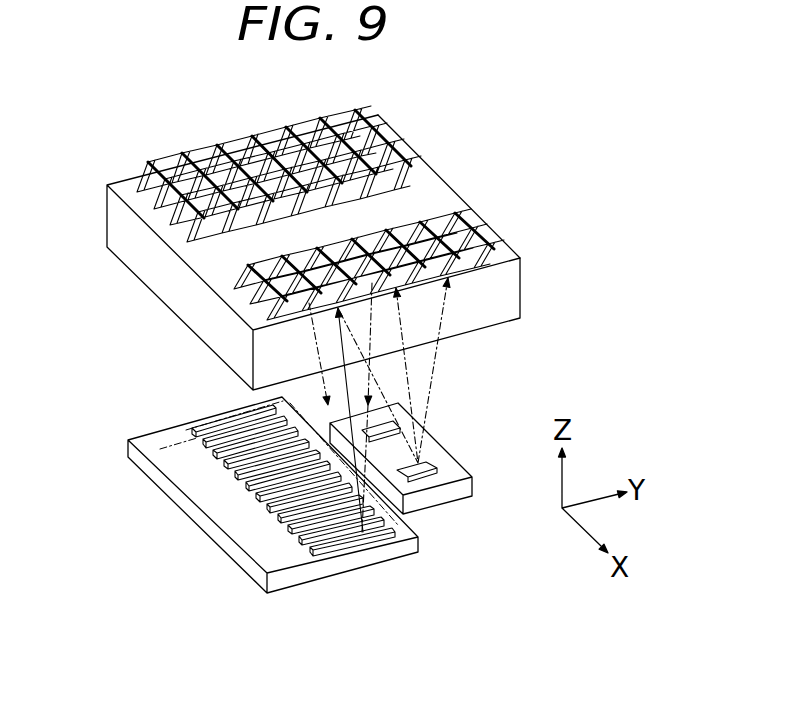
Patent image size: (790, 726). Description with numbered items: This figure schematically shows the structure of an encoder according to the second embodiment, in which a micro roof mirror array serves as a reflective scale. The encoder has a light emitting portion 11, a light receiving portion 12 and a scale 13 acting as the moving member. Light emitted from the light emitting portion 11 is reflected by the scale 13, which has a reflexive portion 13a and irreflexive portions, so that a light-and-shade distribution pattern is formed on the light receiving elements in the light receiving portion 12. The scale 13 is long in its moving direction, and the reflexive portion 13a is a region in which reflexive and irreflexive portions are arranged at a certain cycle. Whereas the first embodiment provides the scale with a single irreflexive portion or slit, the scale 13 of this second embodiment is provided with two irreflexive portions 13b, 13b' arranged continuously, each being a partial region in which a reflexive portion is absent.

The light emitting portion 11 is at (437, 438).
The light receiving portion 12 is at (212, 502).
The scale 13 is at (160, 275).
The reflexive portion 13a is at (477, 241).
The irreflexive portion 13b is at (362, 174).
The irreflexive portion 13b' is at (449, 180).